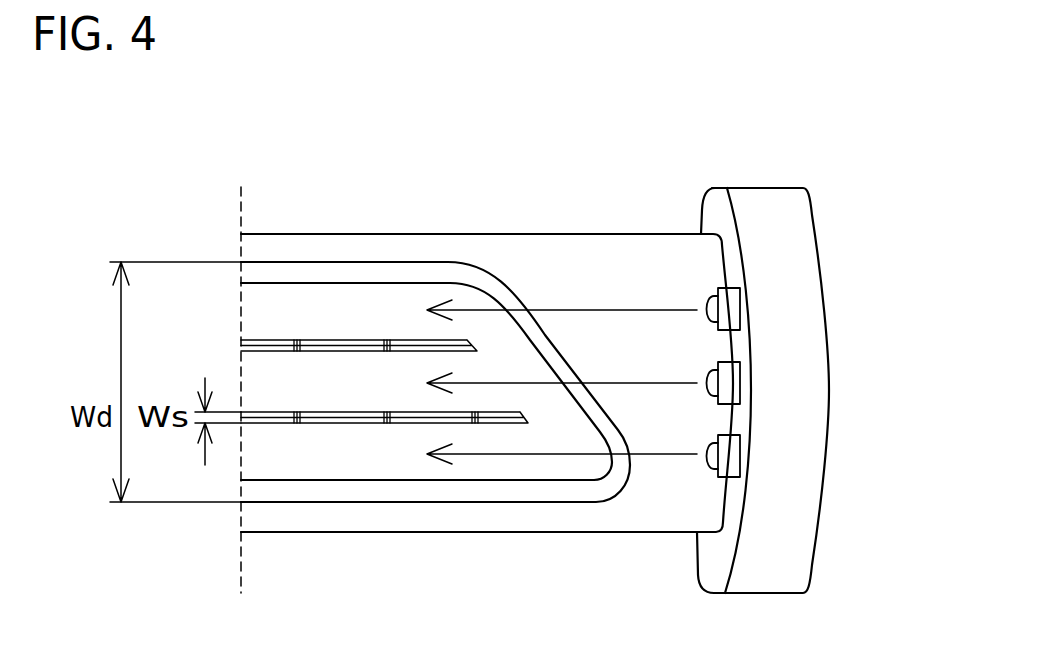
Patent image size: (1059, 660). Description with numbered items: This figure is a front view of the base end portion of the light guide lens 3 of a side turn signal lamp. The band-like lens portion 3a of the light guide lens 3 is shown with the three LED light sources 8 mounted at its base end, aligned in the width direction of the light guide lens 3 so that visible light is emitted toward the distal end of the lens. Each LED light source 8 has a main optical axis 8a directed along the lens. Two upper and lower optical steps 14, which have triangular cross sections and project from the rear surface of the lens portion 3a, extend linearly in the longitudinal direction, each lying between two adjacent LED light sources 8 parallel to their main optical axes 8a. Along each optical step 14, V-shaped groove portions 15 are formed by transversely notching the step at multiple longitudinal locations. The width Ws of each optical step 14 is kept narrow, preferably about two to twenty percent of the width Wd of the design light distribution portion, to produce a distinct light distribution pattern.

The light guide lens 3 is at (467, 233).
The lens portion 3a is at (405, 457).
The LED light source 8 is at (740, 308).
The main optical axis 8a is at (555, 308).
The optical step 14 is at (342, 340).
The groove portion 15 is at (297, 340).